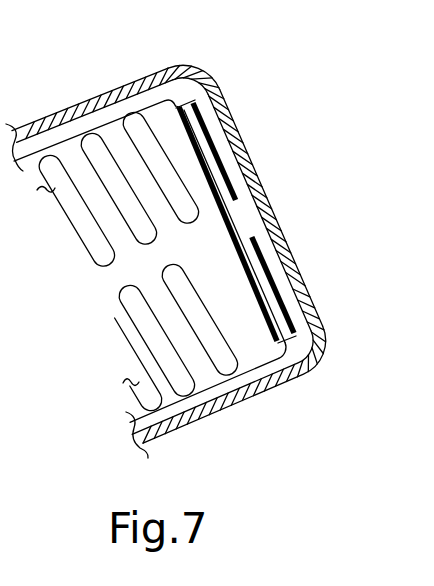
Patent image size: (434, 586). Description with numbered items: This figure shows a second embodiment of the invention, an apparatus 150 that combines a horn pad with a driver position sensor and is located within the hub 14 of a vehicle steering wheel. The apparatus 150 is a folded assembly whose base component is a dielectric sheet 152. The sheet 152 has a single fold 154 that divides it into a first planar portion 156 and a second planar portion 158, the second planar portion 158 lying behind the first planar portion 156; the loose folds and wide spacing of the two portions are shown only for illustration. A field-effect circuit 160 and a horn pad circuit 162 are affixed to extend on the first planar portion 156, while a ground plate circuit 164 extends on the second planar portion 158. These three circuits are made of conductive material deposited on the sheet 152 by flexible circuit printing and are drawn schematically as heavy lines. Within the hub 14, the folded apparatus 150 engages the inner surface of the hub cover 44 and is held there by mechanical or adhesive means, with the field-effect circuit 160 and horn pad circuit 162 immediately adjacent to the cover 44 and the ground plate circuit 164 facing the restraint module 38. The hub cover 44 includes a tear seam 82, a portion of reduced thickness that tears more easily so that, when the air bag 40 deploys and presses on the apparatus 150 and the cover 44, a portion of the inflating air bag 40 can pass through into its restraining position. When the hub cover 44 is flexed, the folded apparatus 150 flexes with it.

The steering wheel hub 14 is at (166, 251).
The restraint module 38 is at (57, 142).
The air bag 40 is at (169, 273).
The hub cover 44 is at (232, 114).
The tear seam 82 is at (262, 205).
The apparatus 150 is at (177, 97).
The dielectric sheet 152 is at (168, 102).
The fold 154 is at (192, 100).
The first planar portion 156 is at (296, 336).
The second planar portion 158 is at (286, 343).
The field-effect circuit 160 is at (212, 147).
The horn pad circuit 162 is at (214, 151).
The ground plate circuit 164 is at (262, 298).